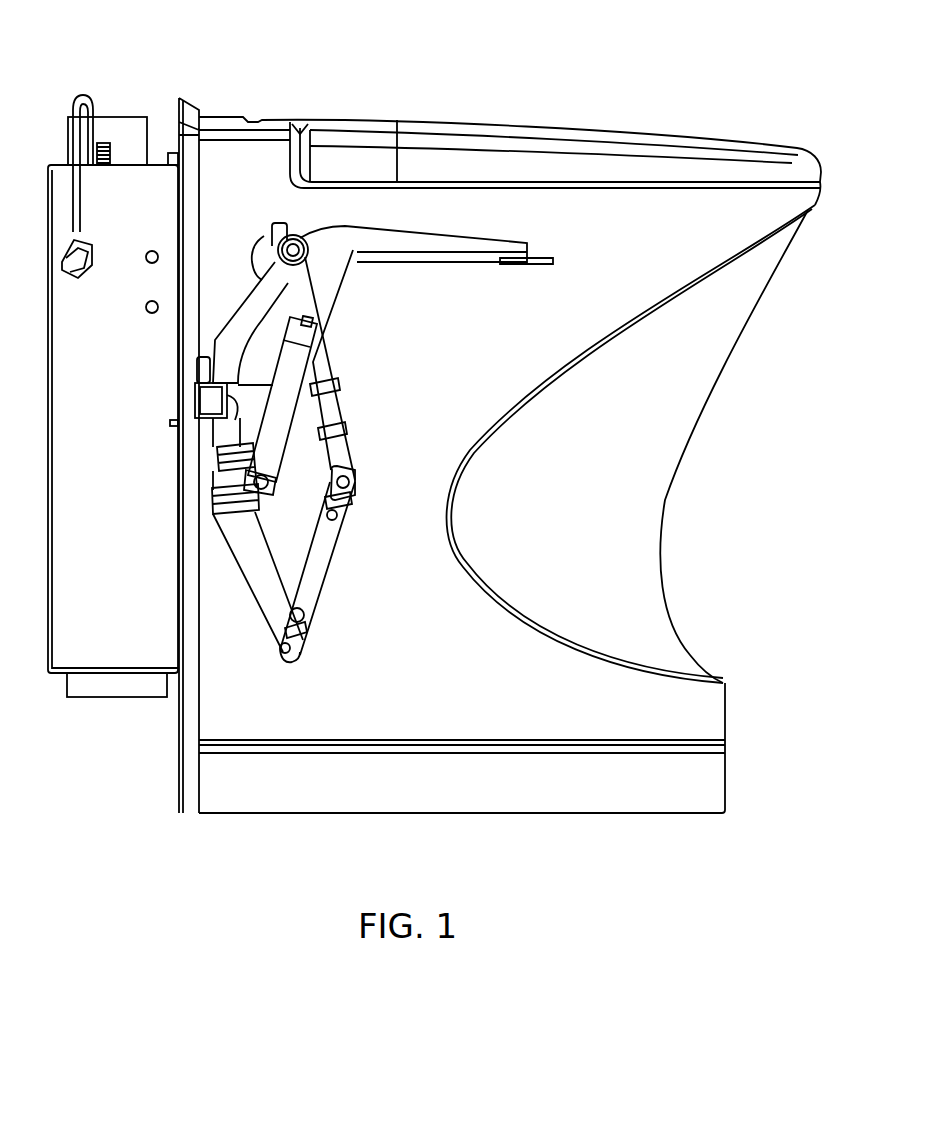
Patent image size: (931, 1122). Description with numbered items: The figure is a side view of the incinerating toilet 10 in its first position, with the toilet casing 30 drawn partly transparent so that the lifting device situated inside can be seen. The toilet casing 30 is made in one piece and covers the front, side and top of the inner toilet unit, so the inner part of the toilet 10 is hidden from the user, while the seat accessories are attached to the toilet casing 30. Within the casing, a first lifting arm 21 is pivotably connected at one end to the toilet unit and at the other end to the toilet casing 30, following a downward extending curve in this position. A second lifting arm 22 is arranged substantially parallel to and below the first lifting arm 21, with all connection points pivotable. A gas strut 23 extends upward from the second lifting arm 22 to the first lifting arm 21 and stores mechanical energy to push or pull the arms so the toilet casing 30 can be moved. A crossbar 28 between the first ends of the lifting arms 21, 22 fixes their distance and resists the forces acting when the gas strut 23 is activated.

The incinerating toilet 10 is at (238, 76).
The first lifting arm 21 is at (320, 370).
The second lifting arm 22 is at (250, 555).
The gas strut 23 is at (235, 425).
The crossbar 28 is at (235, 323).
The toilet casing 30 is at (625, 548).